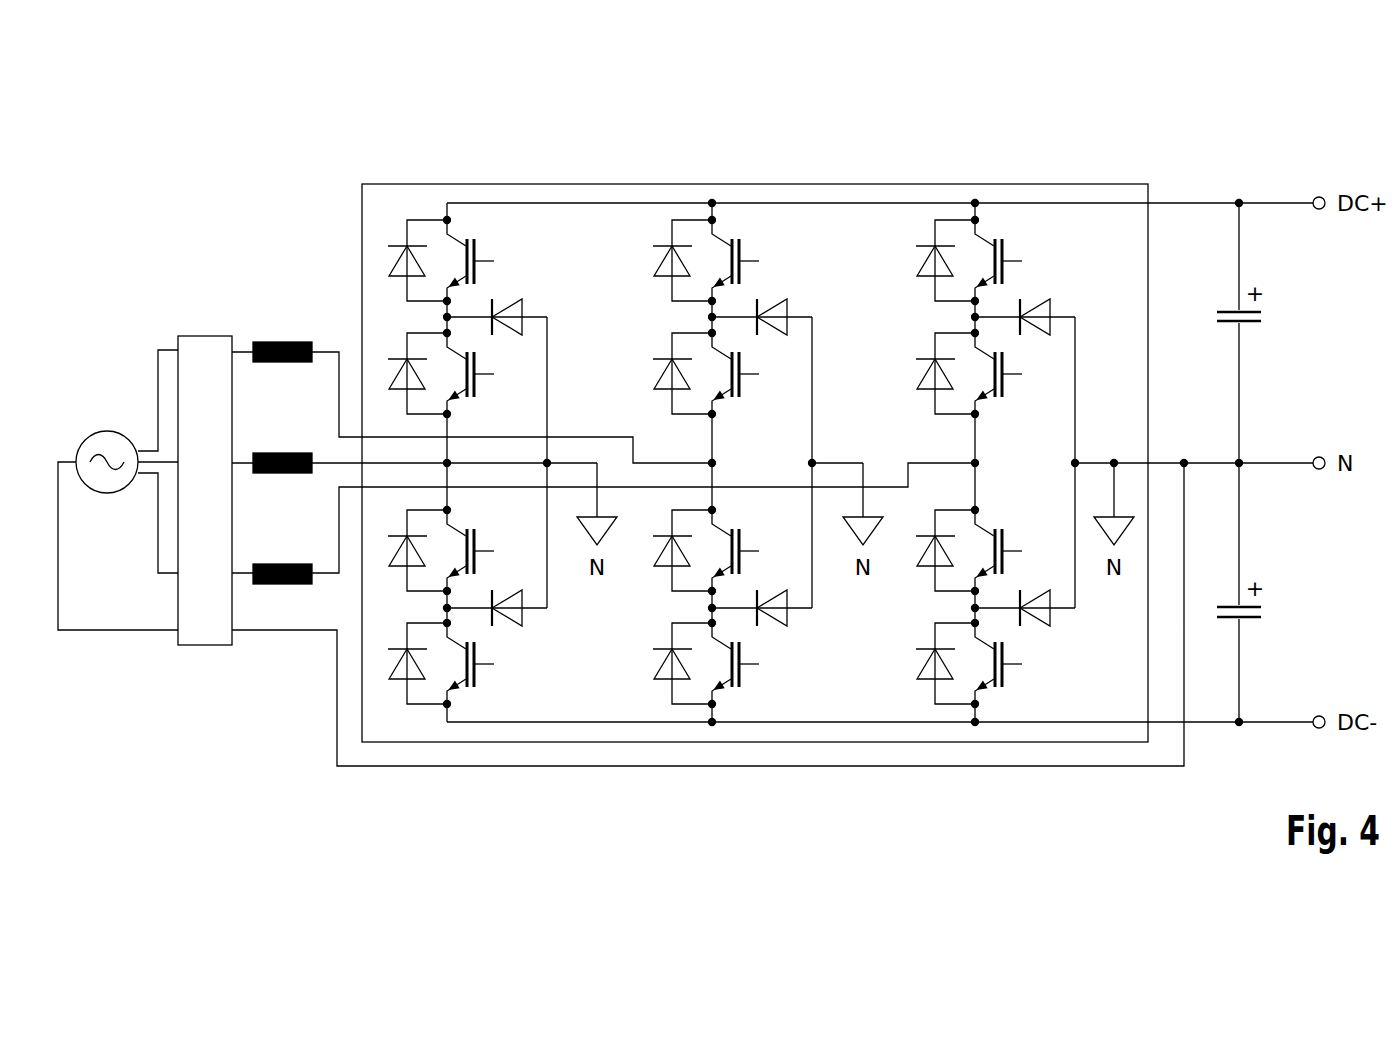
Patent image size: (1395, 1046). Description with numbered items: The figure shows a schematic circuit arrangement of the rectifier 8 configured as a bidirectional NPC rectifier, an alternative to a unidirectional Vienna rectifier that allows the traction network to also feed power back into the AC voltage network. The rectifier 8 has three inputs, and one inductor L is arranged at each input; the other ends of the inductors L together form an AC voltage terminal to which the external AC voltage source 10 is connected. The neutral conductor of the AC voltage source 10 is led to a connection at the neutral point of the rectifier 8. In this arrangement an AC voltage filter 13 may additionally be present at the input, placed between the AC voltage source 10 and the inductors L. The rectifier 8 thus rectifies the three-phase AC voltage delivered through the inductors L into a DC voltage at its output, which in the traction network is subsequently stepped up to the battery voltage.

The rectifier 8 is at (830, 149).
The AC voltage source 10 is at (103, 432).
The AC voltage filter 13 is at (200, 336).
The inductor L is at (278, 342).